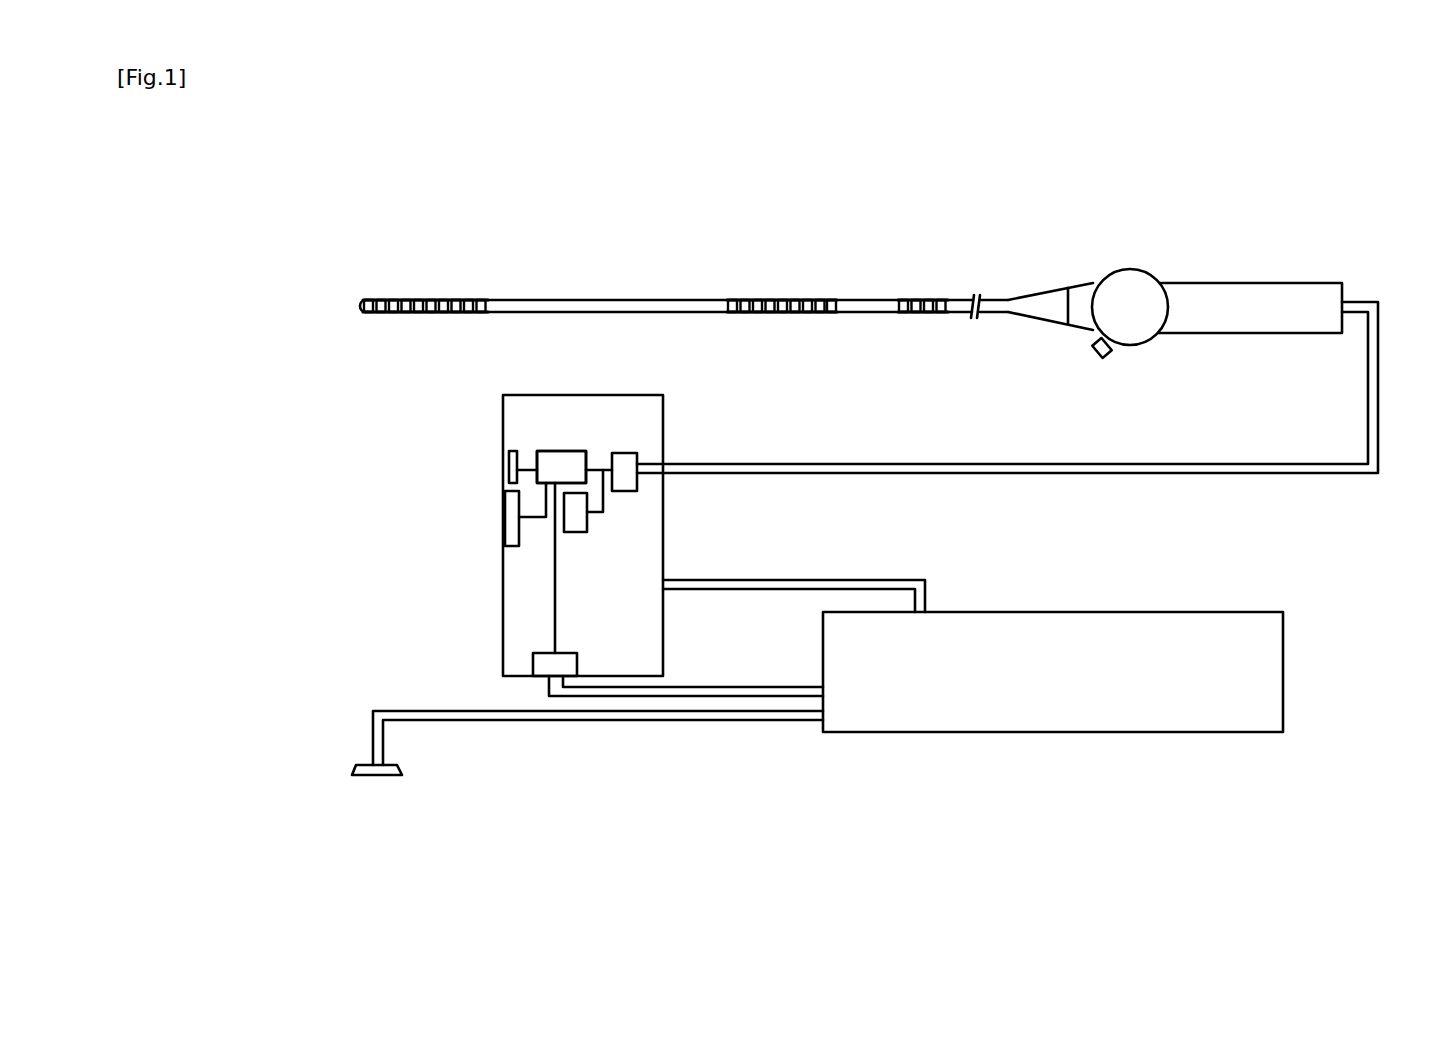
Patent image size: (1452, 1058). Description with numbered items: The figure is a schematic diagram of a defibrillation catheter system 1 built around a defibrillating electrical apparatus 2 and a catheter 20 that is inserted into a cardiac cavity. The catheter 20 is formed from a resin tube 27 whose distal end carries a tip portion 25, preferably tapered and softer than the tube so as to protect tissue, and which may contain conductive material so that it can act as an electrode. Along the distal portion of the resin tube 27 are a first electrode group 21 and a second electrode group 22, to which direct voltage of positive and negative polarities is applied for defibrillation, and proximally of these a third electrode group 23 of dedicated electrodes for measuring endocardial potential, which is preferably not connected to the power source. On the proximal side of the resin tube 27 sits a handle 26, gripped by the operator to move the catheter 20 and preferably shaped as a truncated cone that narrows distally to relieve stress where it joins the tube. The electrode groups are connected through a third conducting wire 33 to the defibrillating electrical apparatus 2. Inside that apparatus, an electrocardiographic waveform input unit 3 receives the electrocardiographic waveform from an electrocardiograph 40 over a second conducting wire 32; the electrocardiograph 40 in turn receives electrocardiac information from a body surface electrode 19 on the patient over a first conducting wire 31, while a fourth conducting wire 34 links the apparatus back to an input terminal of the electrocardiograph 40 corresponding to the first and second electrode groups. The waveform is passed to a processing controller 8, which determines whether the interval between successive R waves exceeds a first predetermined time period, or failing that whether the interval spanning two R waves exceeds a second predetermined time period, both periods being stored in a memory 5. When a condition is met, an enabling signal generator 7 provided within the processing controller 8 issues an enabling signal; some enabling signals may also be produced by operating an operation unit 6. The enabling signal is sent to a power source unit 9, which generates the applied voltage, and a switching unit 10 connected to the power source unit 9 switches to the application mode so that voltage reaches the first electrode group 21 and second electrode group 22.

The defibrillation catheter system 1 is at (821, 198).
The defibrillating electrical apparatus 2 is at (503, 431).
The electrocardiographic waveform input unit 3 is at (533, 667).
The memory 5 is at (509, 466).
The operation unit 6 is at (505, 512).
The enabling signal generator 7 is at (548, 451).
The processing controller 8 is at (568, 451).
The power source unit 9 is at (587, 525).
The switching unit 10 is at (628, 491).
The body surface electrode 19 is at (388, 778).
The catheter 20 is at (1018, 252).
The first electrode group 21 is at (384, 299).
The second electrode group 22 is at (736, 299).
The third electrode group 23 is at (942, 299).
The tip portion 25 is at (360, 313).
The handle 26 is at (1165, 273).
The resin tube 27 is at (598, 300).
The first conducting wire 31 is at (715, 725).
The second conducting wire 32 is at (740, 687).
The third conducting wire 33 is at (905, 463).
The fourth conducting wire 34 is at (828, 580).
The electrocardiograph 40 is at (1092, 612).